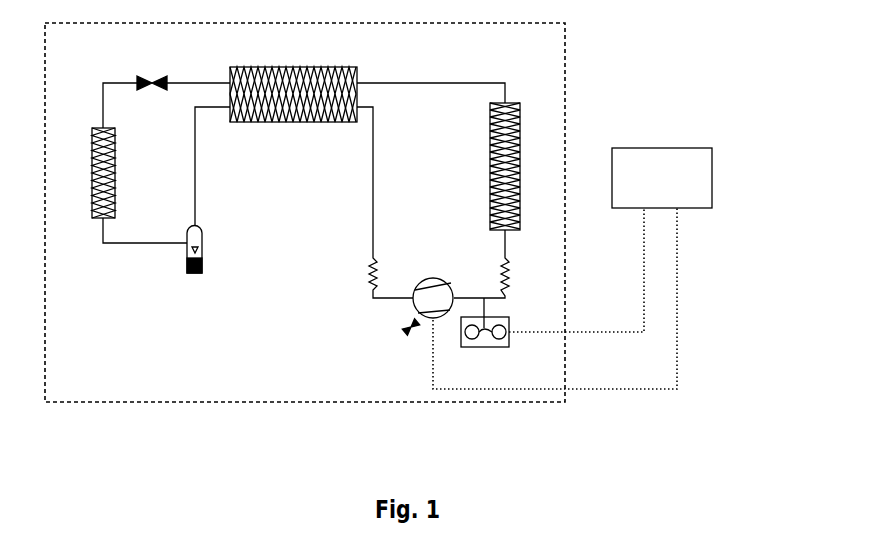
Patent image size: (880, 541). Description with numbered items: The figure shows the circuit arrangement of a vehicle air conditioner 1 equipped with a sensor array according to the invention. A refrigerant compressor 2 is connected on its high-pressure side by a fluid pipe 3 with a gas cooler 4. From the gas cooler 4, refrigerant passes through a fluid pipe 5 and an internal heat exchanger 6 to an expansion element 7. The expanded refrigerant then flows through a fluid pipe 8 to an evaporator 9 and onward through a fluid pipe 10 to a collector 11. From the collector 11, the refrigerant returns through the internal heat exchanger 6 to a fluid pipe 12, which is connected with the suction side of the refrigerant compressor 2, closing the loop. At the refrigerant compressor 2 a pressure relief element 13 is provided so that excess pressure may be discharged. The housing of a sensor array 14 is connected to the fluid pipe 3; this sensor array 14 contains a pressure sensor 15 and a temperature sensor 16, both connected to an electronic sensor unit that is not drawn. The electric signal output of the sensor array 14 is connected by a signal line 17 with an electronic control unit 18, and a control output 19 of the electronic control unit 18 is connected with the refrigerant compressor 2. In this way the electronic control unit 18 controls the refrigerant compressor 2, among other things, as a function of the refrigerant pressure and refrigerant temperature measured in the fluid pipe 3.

The vehicle air conditioner 1 is at (528, 25).
The refrigerant compressor 2 is at (440, 293).
The fluid pipe 3 is at (493, 300).
The gas cooler 4 is at (522, 166).
The fluid pipe 5 is at (433, 77).
The internal heat exchanger 6 is at (304, 74).
The expansion element 7 is at (155, 78).
The fluid pipe 8 is at (100, 105).
The evaporator 9 is at (116, 178).
The fluid pipe 10 is at (139, 248).
The collector 11 is at (203, 270).
The fluid pipe 12 is at (372, 200).
The pressure relief element 13 is at (404, 338).
The sensor array 14 is at (508, 318).
The pressure sensor 15 is at (468, 345).
The temperature sensor 16 is at (502, 348).
The signal line 17 is at (605, 331).
The electronic control unit 18 is at (657, 162).
The control output 19 is at (680, 350).